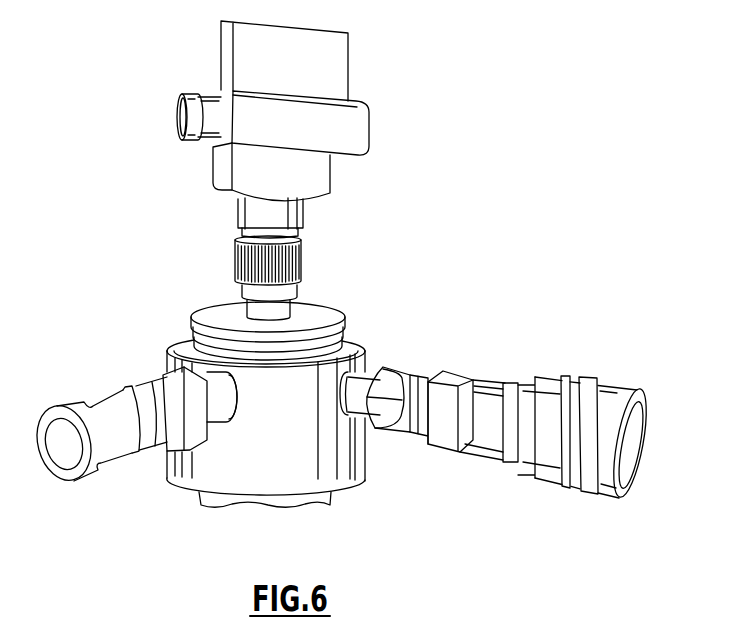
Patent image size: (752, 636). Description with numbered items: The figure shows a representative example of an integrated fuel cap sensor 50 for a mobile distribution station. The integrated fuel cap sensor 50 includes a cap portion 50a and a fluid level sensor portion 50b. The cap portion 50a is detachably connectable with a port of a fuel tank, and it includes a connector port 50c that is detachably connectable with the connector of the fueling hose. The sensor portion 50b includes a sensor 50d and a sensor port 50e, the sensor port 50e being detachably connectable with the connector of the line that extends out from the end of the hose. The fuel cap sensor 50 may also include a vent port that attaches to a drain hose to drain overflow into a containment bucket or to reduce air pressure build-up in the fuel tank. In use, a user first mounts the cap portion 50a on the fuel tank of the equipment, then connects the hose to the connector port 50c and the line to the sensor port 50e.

The integrated fuel cap sensor 50 is at (343, 291).
The cap portion 50a is at (280, 484).
The fluid level sensor portion 50b is at (322, 189).
The connector port 50c is at (597, 405).
The sensor 50d is at (247, 188).
The sensor port 50e is at (189, 138).